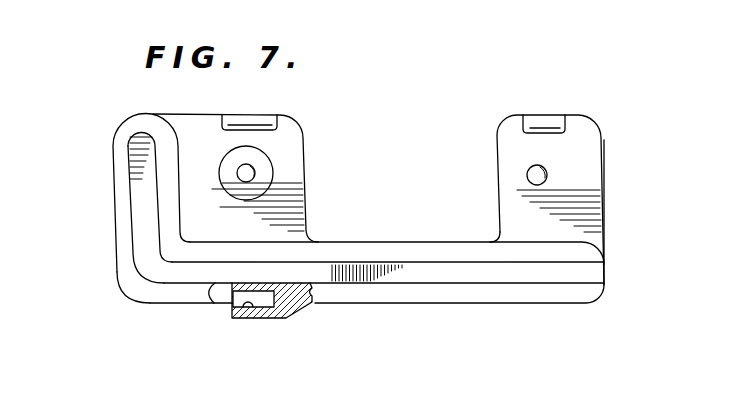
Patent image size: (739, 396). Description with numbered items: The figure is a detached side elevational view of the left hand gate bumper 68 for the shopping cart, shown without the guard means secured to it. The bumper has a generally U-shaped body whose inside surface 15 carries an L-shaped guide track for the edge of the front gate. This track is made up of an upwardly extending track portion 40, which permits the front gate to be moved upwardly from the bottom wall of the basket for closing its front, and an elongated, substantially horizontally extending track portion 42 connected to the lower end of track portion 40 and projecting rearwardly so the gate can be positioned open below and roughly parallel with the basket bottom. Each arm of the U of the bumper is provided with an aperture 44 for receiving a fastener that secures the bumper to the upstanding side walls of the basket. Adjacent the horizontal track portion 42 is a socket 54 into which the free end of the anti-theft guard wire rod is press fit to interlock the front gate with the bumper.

The bracket assembly 68 is at (356, 201).
The upwardly extending track portion 40 is at (142, 206).
The horizontally extending track portion 42 is at (468, 272).
The aperture 44 is at (255, 174).
The right mounting plate 15 is at (572, 213).
The socket 54 is at (250, 312).